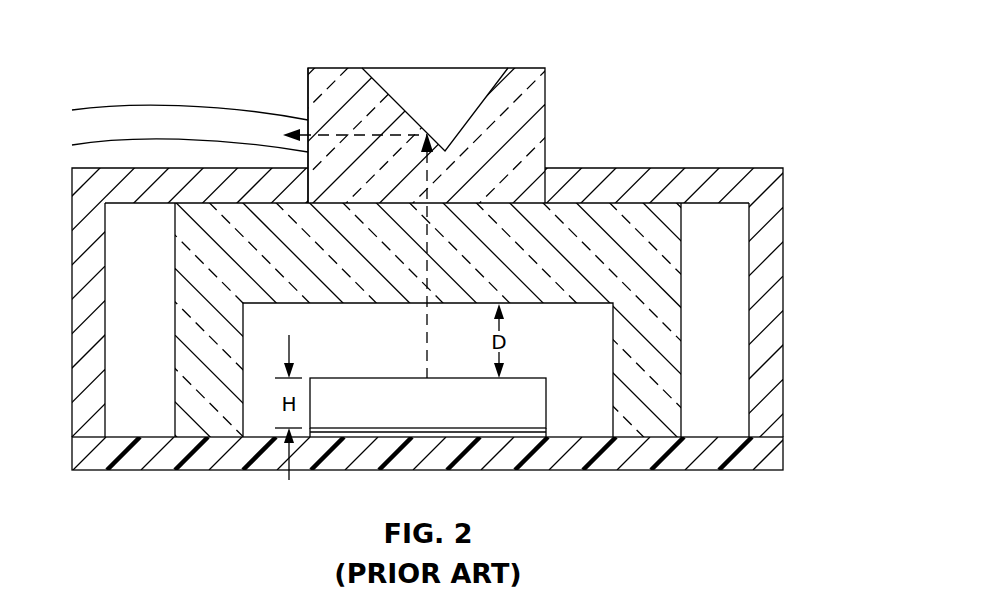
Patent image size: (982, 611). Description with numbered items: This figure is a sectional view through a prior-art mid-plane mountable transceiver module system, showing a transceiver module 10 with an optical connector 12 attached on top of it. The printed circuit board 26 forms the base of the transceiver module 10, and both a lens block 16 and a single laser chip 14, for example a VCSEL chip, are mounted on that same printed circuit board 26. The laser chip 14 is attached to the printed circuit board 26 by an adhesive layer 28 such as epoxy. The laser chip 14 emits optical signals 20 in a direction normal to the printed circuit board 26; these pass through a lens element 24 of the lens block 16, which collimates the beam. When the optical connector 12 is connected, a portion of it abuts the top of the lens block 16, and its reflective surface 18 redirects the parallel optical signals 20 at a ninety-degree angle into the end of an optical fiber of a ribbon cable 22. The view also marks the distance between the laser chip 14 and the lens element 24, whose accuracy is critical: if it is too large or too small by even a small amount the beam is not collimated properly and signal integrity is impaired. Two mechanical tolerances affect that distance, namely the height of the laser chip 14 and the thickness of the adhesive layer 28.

The transceiver module 10 is at (687, 146).
The optical connector 12 is at (547, 83).
The laser chip 14 is at (546, 403).
The lens block 16 is at (681, 318).
The reflective surface 18 is at (393, 100).
The optical signals 20 is at (326, 130).
The ribbon cable 22 is at (187, 108).
The lens element 24 is at (443, 303).
The printed circuit board 26 is at (158, 470).
The adhesive layer 28 is at (493, 440).